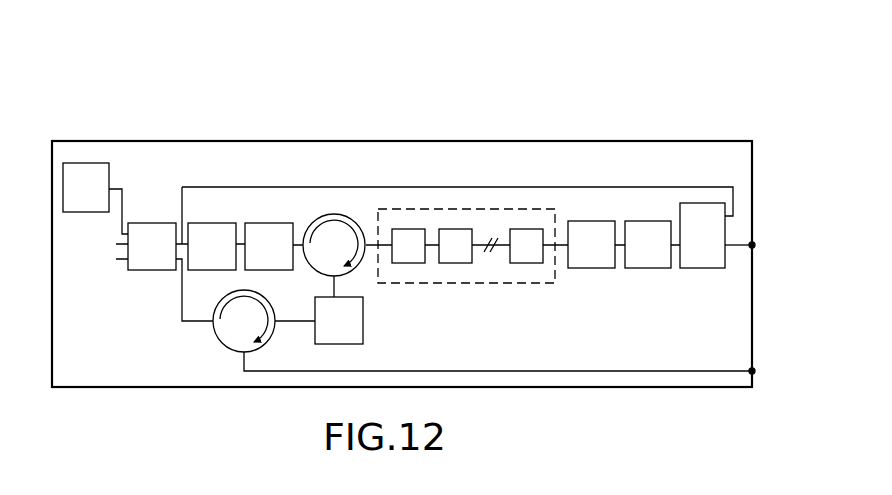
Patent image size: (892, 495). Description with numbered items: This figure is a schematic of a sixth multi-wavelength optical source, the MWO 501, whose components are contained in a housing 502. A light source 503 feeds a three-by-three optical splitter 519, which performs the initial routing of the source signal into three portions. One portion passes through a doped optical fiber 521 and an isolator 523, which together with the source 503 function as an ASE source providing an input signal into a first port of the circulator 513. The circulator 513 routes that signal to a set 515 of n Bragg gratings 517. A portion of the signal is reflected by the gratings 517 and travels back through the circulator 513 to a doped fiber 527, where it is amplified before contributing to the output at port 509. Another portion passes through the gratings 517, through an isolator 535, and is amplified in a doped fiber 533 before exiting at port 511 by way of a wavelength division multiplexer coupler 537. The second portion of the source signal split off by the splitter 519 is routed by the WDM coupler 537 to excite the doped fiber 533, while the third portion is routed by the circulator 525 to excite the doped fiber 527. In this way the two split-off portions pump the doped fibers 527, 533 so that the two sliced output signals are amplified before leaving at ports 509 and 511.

The multi-wavelength optical source (MWO) 501 is at (103, 112).
The housing 502 is at (222, 140).
The light source 503 is at (105, 196).
The port 509 is at (754, 371).
The port 511 is at (754, 245).
The circulator 513 is at (353, 256).
The set of Bragg gratings 515 is at (543, 208).
The Bragg gratings 517 is at (520, 228).
The 3×3 optical splitter 519 is at (171, 257).
The doped optical fiber 521 is at (231, 257).
The isolator 523 is at (288, 257).
The circulator 525 is at (263, 332).
The doped fiber 527 is at (358, 331).
The doped fiber 533 is at (667, 255).
The isolator 535 is at (610, 255).
The wavelength division multiplexer (WDM) coupler 537 is at (721, 255).